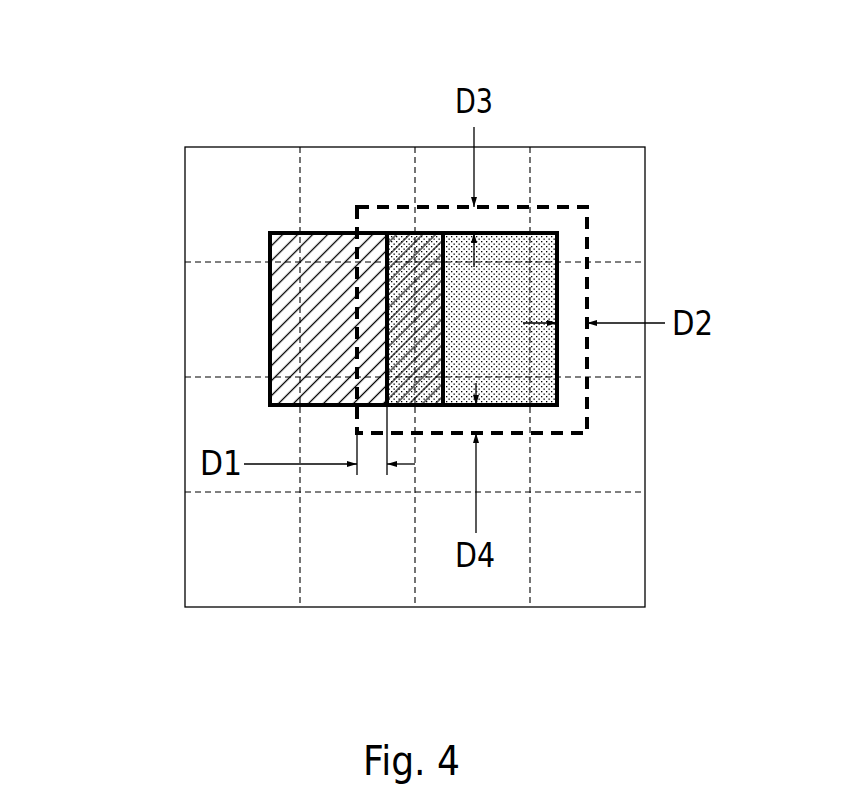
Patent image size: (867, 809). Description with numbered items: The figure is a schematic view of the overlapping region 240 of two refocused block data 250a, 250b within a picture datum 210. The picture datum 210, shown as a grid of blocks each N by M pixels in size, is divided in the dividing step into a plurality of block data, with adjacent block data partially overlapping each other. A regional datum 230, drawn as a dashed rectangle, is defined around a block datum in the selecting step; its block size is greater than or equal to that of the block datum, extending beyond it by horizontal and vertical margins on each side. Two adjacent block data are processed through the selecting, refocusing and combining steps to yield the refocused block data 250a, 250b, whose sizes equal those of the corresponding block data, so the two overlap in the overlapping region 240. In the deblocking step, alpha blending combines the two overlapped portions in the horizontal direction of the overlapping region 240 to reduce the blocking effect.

The picture datum 210 is at (175, 112).
The regional datum 230 is at (600, 290).
The overlapping region 240 is at (407, 272).
The refocused block datum 250a is at (290, 333).
The refocused block datum 250b is at (543, 352).